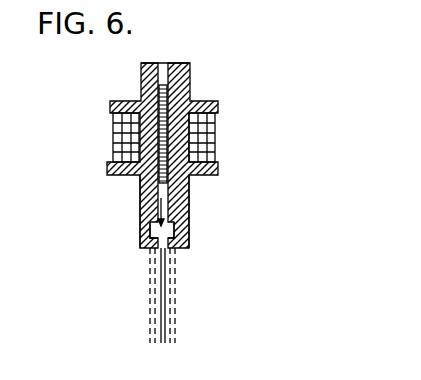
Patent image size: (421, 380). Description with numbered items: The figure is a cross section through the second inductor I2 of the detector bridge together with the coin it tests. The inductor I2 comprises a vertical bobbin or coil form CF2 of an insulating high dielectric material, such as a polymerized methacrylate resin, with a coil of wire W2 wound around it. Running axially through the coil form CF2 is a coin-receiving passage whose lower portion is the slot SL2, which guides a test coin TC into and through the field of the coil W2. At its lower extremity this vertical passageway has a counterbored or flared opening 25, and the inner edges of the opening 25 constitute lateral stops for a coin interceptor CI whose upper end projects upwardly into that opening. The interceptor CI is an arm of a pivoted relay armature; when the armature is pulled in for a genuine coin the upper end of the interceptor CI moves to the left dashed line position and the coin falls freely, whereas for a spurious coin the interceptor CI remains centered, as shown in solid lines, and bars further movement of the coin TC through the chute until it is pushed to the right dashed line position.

The slot SL2 is at (189, 68).
The test coin TC is at (170, 97).
The coil of wire W2 is at (205, 153).
The inductor I2 is at (112, 158).
The coil form CF2 is at (189, 180).
The flared opening 25 is at (175, 228).
The coin interceptor CI is at (162, 261).